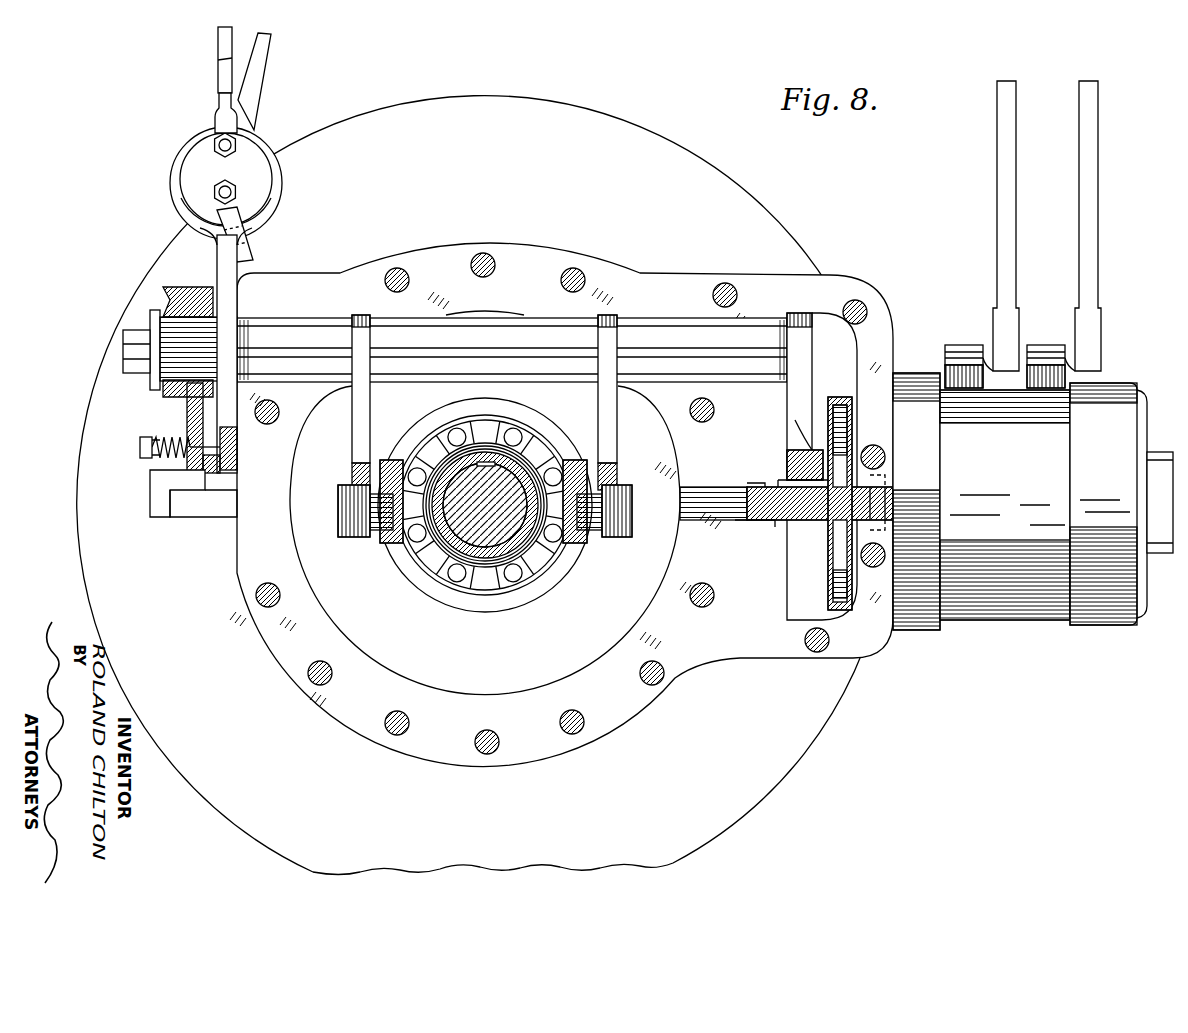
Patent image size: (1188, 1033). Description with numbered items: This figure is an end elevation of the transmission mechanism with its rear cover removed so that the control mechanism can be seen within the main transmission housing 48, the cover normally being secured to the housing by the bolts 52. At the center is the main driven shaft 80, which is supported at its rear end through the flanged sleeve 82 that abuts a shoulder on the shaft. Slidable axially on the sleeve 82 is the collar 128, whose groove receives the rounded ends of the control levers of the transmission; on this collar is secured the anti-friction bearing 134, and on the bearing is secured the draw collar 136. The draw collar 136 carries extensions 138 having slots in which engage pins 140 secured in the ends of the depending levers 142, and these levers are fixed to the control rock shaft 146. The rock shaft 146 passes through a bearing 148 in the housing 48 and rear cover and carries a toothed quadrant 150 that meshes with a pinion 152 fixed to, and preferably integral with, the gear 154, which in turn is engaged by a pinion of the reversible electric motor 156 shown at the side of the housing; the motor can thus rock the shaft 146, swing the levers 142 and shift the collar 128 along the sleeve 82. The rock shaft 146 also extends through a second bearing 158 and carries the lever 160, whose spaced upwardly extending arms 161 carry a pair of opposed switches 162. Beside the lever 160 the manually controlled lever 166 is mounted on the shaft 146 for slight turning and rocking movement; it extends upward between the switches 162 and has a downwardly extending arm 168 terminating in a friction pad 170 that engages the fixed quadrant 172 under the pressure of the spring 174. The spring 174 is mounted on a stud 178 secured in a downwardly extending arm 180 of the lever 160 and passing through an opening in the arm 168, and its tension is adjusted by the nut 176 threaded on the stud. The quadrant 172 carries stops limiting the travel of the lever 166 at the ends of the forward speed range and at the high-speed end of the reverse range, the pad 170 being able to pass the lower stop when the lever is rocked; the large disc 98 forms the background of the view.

The main transmission housing 48 is at (473, 760).
The bolts 52 is at (330, 682).
The main driven shaft 80 is at (497, 538).
The flanged sleeve 82 is at (467, 548).
The disc 98 is at (511, 244).
The collar 128 is at (478, 428).
The anti-friction bearing 134 is at (481, 586).
The draw collar 136 is at (409, 578).
The extensions 138 is at (391, 547).
The pins 140 is at (379, 500).
The depending levers 142 is at (362, 537).
The control rock shaft 146 is at (250, 325).
The bearing 148 is at (723, 327).
The toothed quadrant 150 is at (787, 465).
The pinion 152 is at (805, 522).
The gear 154 is at (837, 398).
The reversible electric motor 156 is at (986, 616).
The second bearing 158 is at (308, 323).
The lever 160 is at (228, 337).
The arms 161 is at (278, 174).
The switches 162 is at (192, 165).
The manually controlled lever 166 is at (259, 68).
The arm 168 is at (197, 413).
The friction pad 170 is at (152, 518).
The fixed quadrant 172 is at (167, 518).
The spring 174 is at (168, 437).
The nut 176 is at (143, 460).
The stud 178 is at (143, 447).
The arm 180 is at (229, 422).